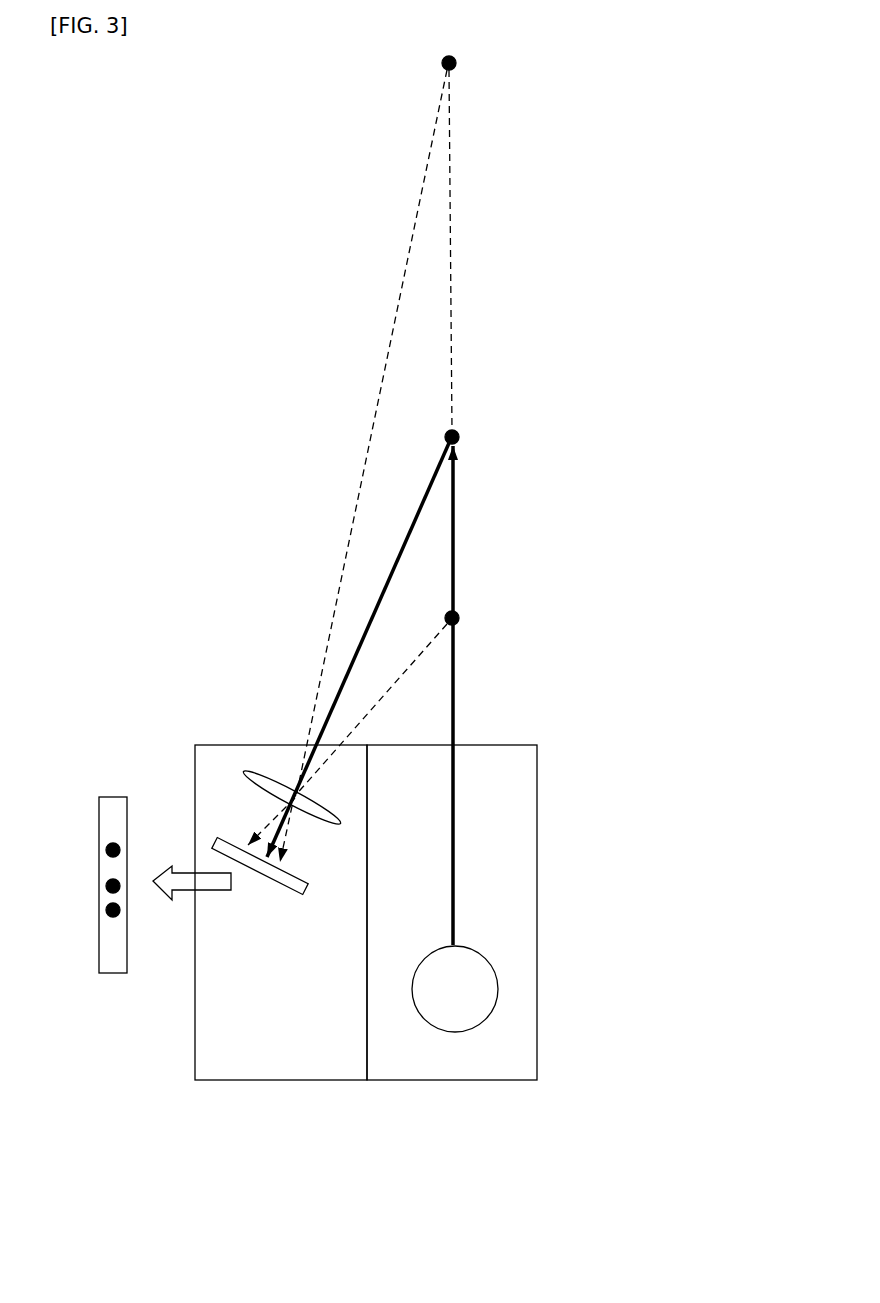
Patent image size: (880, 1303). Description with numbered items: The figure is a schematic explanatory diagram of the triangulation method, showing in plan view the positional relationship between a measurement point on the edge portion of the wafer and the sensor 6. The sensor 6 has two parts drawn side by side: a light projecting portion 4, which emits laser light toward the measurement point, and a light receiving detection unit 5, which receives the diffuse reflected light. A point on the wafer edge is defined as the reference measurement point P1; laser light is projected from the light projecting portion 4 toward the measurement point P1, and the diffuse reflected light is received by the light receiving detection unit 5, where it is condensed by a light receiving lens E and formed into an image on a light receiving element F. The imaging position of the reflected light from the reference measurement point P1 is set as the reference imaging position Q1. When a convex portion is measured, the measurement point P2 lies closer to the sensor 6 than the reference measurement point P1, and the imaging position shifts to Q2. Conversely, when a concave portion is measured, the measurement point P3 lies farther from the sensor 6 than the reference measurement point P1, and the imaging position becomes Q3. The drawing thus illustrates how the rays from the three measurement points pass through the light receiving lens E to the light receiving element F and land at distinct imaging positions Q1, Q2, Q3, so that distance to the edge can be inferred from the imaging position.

The light projecting portion 4 is at (452, 943).
The light receiving detection unit 5 is at (283, 1080).
The sensor 6 is at (366, 968).
The light receiving lens E is at (243, 772).
The light receiving element F is at (282, 890).
The measurement point P1 is at (381, 686).
The measurement point P2 is at (388, 735).
The measurement point P3 is at (371, 449).
The imaging position Q1 is at (85, 886).
The imaging position Q2 is at (85, 850).
The imaging position Q3 is at (85, 910).